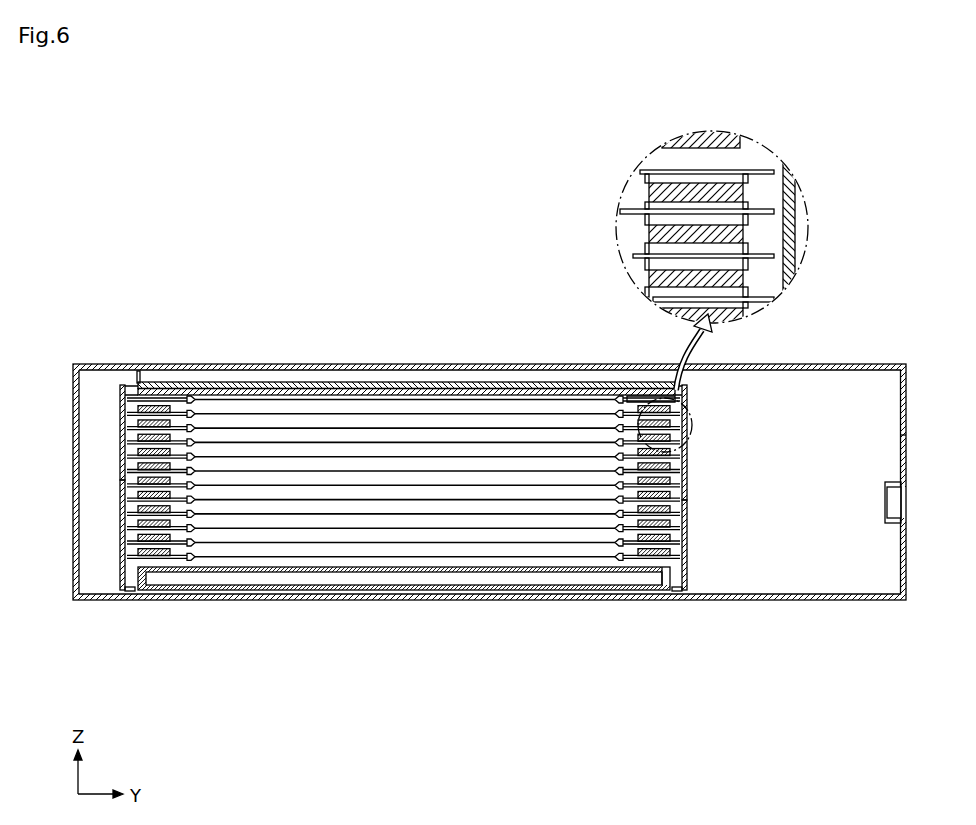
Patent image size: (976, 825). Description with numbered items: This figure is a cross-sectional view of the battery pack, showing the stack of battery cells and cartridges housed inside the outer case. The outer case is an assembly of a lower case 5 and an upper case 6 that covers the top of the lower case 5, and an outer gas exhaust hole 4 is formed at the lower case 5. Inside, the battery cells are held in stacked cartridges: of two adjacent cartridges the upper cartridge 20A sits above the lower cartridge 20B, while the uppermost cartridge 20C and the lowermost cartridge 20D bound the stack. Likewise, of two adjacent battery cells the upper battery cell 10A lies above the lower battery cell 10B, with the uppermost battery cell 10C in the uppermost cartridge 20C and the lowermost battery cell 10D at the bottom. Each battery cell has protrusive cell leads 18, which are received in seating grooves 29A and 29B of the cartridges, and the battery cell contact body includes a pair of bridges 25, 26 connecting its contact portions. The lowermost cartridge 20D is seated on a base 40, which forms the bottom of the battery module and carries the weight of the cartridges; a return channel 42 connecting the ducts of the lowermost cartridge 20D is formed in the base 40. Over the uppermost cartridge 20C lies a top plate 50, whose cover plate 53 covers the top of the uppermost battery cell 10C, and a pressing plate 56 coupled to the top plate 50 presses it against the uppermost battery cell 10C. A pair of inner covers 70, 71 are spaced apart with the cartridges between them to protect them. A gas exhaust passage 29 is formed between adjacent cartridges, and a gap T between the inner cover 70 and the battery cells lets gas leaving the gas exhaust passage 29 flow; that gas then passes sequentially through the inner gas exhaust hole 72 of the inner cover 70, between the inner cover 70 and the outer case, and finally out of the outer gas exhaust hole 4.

The outer gas exhaust hole 4 is at (901, 502).
The lower case 5 is at (906, 458).
The upper case 6 is at (906, 417).
The upper battery cell 10A is at (345, 514).
The lower battery cell 10B is at (389, 529).
The uppermost battery cell 10C is at (347, 401).
The lowermost battery cell 10D is at (283, 558).
The cell lead 18 is at (675, 558).
The upper cartridge 20A is at (135, 454).
The lower cartridge 20B is at (138, 467).
The uppermost cartridge 20C is at (135, 410).
The lowermost cartridge 20D is at (137, 552).
The bridge 25 is at (650, 556).
The bridge 26 is at (165, 559).
The gas exhaust passage 29 is at (750, 241).
The seating groove 29A is at (693, 180).
The seating groove 29B is at (737, 205).
The base 40 is at (140, 592).
The return channel 42 is at (437, 578).
The top plate 50 is at (133, 386).
The cover plate 53 is at (433, 392).
The pressing plate 56 is at (238, 382).
The inner cover 70 is at (687, 563).
The inner cover 71 is at (120, 580).
The inner gas exhaust hole 72 is at (688, 500).
The gap T is at (678, 467).